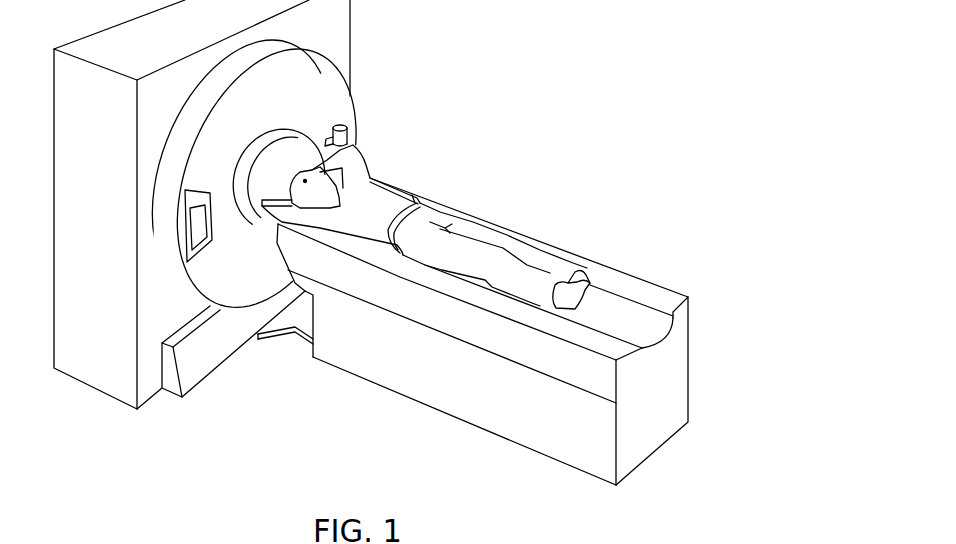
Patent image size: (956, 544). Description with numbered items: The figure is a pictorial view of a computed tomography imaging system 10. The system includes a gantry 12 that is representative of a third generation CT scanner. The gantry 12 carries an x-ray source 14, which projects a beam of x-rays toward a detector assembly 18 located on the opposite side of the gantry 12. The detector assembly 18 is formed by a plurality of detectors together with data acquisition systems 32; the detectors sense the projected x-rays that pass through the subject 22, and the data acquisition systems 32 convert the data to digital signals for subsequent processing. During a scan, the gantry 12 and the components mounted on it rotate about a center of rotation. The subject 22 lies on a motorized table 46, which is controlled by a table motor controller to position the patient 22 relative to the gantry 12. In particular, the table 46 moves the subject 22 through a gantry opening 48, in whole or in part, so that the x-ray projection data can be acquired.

The computed tomography (CT) imaging system 10 is at (371, 242).
The gantry 12 is at (337, 95).
The x-ray source 14 is at (350, 136).
The detector assembly 18 is at (198, 251).
The subject 22 is at (383, 198).
The data acquisition systems (DAS) 32 is at (198, 193).
The motorized table 46 is at (456, 408).
The gantry opening 48 is at (259, 144).